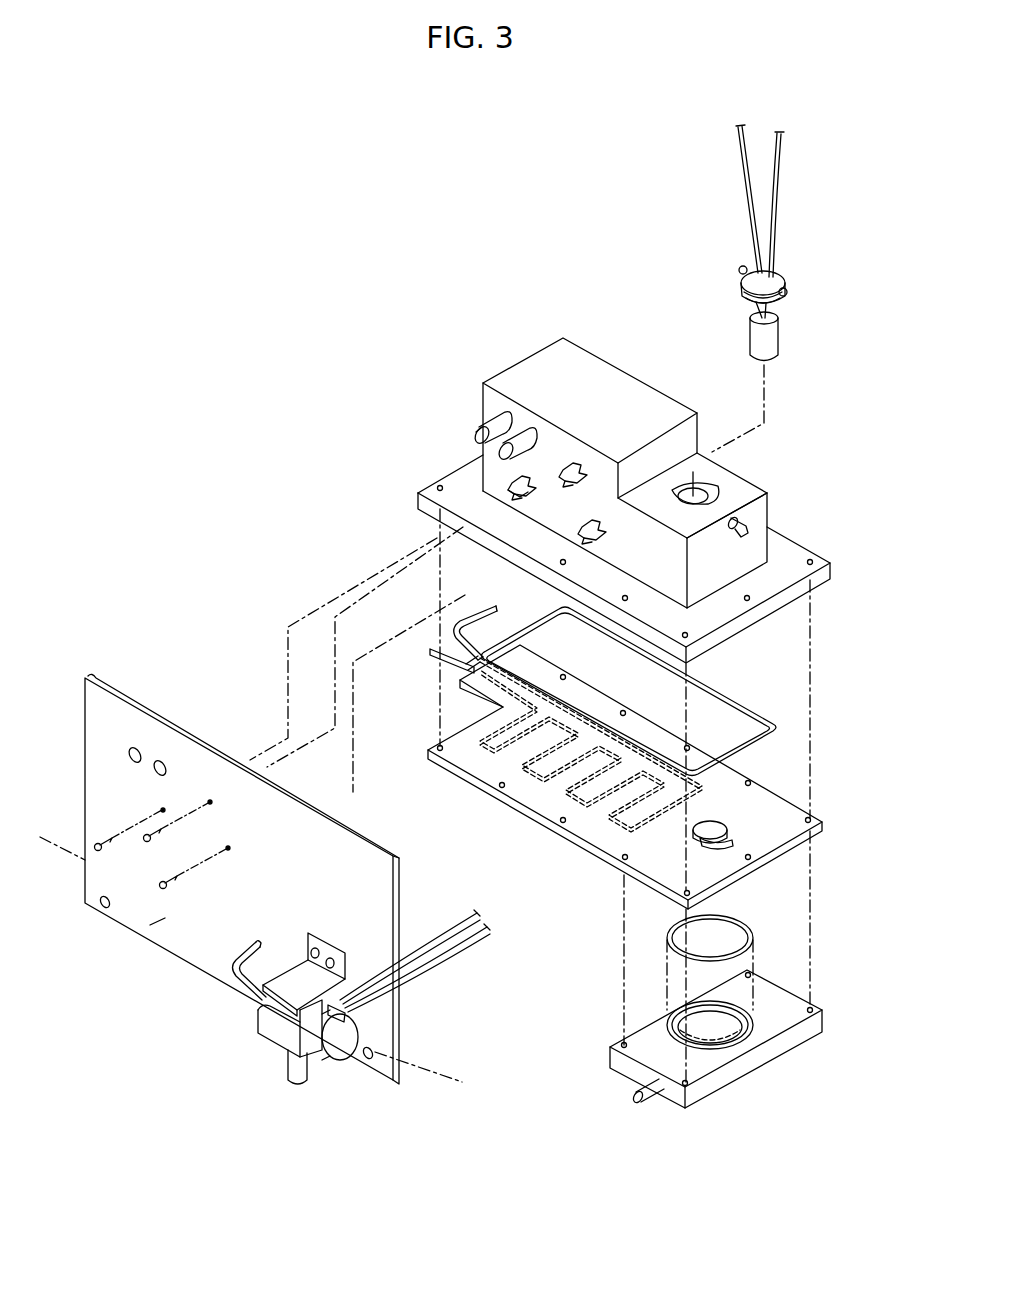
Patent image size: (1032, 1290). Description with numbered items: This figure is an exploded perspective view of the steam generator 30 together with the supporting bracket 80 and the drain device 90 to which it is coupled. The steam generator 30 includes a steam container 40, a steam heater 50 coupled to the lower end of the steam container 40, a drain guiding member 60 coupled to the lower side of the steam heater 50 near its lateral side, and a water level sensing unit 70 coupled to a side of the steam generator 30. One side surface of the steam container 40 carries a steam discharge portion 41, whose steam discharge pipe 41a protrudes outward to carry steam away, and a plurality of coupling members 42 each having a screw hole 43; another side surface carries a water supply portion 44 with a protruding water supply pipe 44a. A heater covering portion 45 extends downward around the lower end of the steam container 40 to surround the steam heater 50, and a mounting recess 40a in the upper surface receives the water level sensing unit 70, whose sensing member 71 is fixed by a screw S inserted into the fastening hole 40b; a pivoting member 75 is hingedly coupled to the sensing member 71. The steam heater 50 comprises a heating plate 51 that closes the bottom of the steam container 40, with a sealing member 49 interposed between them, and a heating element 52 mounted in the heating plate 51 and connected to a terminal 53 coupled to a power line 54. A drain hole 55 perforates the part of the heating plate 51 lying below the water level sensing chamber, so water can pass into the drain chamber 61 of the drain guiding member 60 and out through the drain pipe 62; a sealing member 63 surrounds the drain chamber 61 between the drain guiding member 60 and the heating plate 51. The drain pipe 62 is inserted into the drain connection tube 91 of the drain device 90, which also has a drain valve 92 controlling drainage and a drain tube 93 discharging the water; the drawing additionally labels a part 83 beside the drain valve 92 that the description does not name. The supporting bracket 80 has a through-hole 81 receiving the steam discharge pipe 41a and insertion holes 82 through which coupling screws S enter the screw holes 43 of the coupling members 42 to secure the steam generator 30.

The steam generator 30 is at (335, 472).
The steam container 40 is at (585, 360).
The mounting recess 40a is at (712, 490).
The fastening hole 40b is at (678, 485).
The steam discharge portion 41 is at (472, 415).
The steam discharge pipe 41a is at (496, 420).
The coupling members 42 is at (514, 480).
The screw hole 43 is at (512, 492).
The water supply portion 44 is at (746, 544).
The water supply pipe 44a is at (742, 527).
The heater covering portion 45 is at (800, 588).
The sealing member 49 is at (735, 700).
The steam heater 50 is at (814, 820).
The heating plate 51 is at (616, 845).
The heating element 52 is at (497, 755).
The terminal 53 is at (468, 670).
The power line 54 is at (492, 614).
The drain hole 55 is at (720, 826).
The drain guiding member 60 is at (778, 995).
The drain chamber 61 is at (712, 1030).
The drain pipe 62 is at (651, 1100).
The sealing member 63 is at (745, 920).
The water level sensing unit 70 is at (829, 300).
The sensing member 71 is at (785, 269).
The pivoting member 75 is at (780, 353).
The supporting bracket 80 is at (88, 677).
The through-hole 81 is at (128, 756).
The insertion holes 82 is at (158, 812).
The bracket 83 is at (292, 975).
The screw S is at (158, 924).
The drain device 90 is at (252, 1028).
The drain connection tube 91 is at (228, 972).
The drain valve 92 is at (343, 1050).
The drain tube 93 is at (290, 1063).